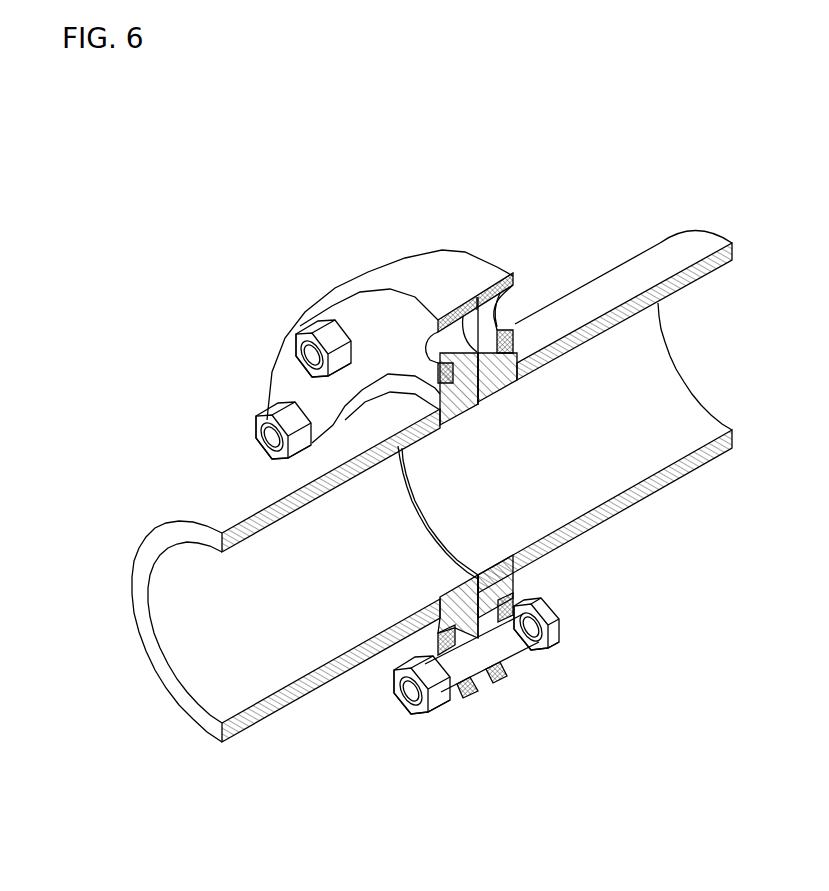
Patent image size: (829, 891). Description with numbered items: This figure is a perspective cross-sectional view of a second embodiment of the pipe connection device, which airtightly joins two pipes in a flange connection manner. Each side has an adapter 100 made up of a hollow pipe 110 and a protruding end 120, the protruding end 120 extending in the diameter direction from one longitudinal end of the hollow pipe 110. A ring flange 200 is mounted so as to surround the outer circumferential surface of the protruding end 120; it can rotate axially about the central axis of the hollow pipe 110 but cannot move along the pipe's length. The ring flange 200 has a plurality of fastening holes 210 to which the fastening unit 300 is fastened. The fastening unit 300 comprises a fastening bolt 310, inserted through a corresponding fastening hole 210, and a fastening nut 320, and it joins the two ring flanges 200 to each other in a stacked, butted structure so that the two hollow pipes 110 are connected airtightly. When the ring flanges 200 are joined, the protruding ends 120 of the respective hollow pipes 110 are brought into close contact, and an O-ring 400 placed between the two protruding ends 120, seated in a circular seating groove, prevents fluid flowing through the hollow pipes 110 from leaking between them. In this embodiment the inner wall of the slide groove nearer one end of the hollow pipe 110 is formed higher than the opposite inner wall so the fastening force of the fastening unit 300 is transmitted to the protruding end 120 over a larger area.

The adapter 100 is at (660, 260).
The hollow pipe 110 is at (247, 507).
The protruding end 120 is at (355, 398).
The ring flange 200 is at (447, 267).
The fastening hole 210 is at (498, 314).
The fastening unit 300 is at (556, 679).
The fastening bolt 310 is at (493, 653).
The fastening nut 320 is at (543, 628).
The O-ring 400 is at (495, 586).